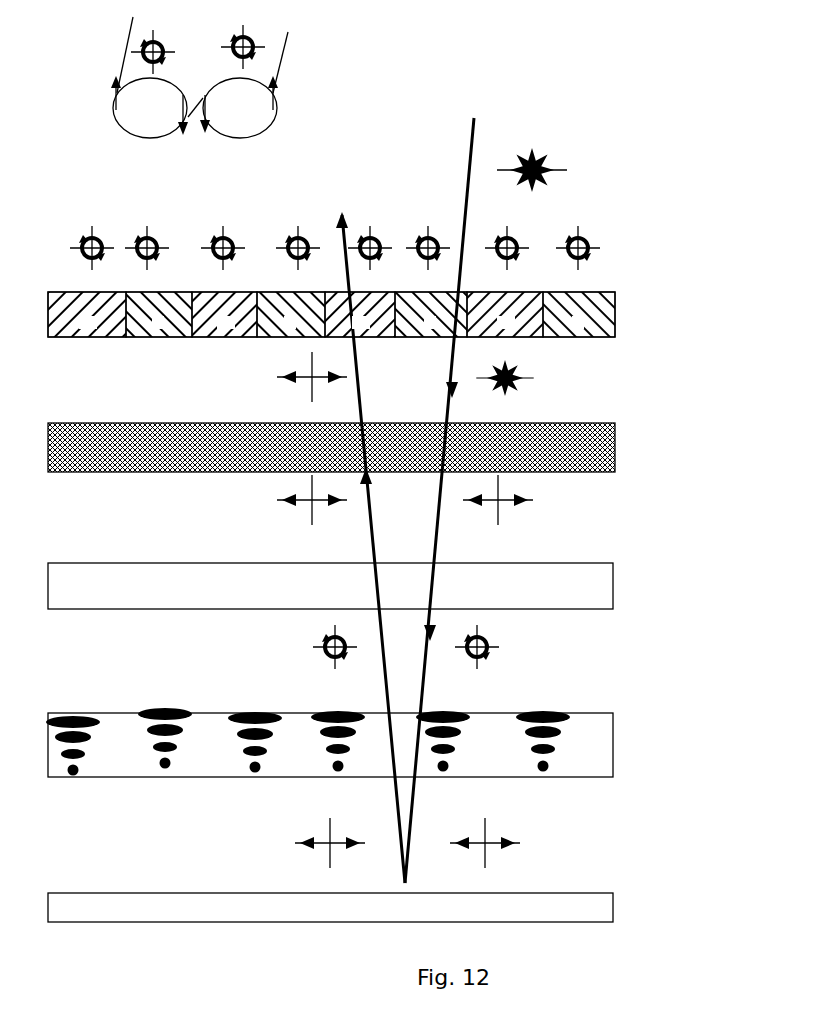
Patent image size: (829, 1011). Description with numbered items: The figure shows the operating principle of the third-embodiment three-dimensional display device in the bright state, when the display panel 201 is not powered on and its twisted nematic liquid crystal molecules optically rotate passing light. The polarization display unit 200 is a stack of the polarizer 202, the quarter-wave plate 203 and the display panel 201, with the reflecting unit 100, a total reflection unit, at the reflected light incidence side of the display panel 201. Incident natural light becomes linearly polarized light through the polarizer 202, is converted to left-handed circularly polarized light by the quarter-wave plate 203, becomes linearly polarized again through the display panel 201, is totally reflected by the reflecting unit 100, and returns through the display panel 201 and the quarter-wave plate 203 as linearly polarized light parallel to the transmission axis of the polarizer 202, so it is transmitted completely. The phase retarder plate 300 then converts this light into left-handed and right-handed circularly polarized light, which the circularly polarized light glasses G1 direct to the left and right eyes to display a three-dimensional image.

The circularly polarized light glasses G1 is at (285, 93).
The phase retarder plate 300 is at (615, 314).
The polarization display unit 200 is at (417, 600).
The polarizer 202 is at (615, 445).
The λ/4 wave plate 203 is at (613, 585).
The display panel 201 is at (368, 742).
The reflecting unit 100 is at (613, 908).